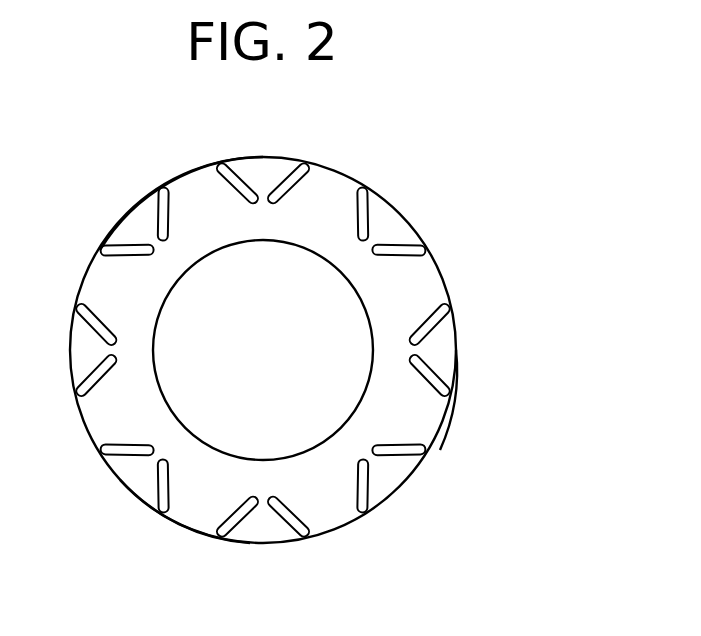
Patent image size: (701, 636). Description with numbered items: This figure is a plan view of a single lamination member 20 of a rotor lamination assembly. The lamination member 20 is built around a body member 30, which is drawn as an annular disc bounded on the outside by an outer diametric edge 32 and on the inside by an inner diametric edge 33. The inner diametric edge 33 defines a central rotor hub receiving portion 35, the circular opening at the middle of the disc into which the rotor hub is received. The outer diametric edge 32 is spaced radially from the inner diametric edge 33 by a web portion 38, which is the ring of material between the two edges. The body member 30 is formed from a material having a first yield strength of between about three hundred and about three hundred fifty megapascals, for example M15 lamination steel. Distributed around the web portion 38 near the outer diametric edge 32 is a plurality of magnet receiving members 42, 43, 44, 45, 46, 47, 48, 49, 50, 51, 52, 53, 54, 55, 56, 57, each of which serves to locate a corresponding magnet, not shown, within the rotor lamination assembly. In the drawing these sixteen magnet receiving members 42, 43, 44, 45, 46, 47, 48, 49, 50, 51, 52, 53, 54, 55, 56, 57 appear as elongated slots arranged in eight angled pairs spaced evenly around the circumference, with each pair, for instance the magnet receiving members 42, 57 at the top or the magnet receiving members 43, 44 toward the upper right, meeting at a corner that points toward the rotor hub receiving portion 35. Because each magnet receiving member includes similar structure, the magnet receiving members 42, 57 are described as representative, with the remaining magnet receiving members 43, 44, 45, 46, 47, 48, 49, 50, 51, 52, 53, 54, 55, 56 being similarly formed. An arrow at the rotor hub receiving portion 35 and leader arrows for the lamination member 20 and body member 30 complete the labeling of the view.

The lamination member 20 is at (460, 535).
The body member 30 is at (455, 420).
The outer diametric edge 32 is at (182, 538).
The inner diametric edge 33 is at (158, 322).
The rotor hub receiving portion 35 is at (310, 328).
The web portion 38 is at (197, 197).
The magnet receiving member 42 is at (303, 185).
The magnet receiving member 43 is at (353, 207).
The magnet receiving member 44 is at (397, 245).
The magnet receiving member 45 is at (435, 313).
The magnet receiving member 46 is at (438, 368).
The magnet receiving member 47 is at (405, 443).
The magnet receiving member 48 is at (368, 480).
The magnet receiving member 49 is at (287, 505).
The magnet receiving member 50 is at (242, 522).
The magnet receiving member 51 is at (170, 484).
The magnet receiving member 52 is at (128, 455).
The magnet receiving member 53 is at (95, 383).
The magnet receiving member 54 is at (85, 323).
The magnet receiving member 55 is at (128, 257).
The magnet receiving member 56 is at (157, 215).
The magnet receiving member 57 is at (243, 183).